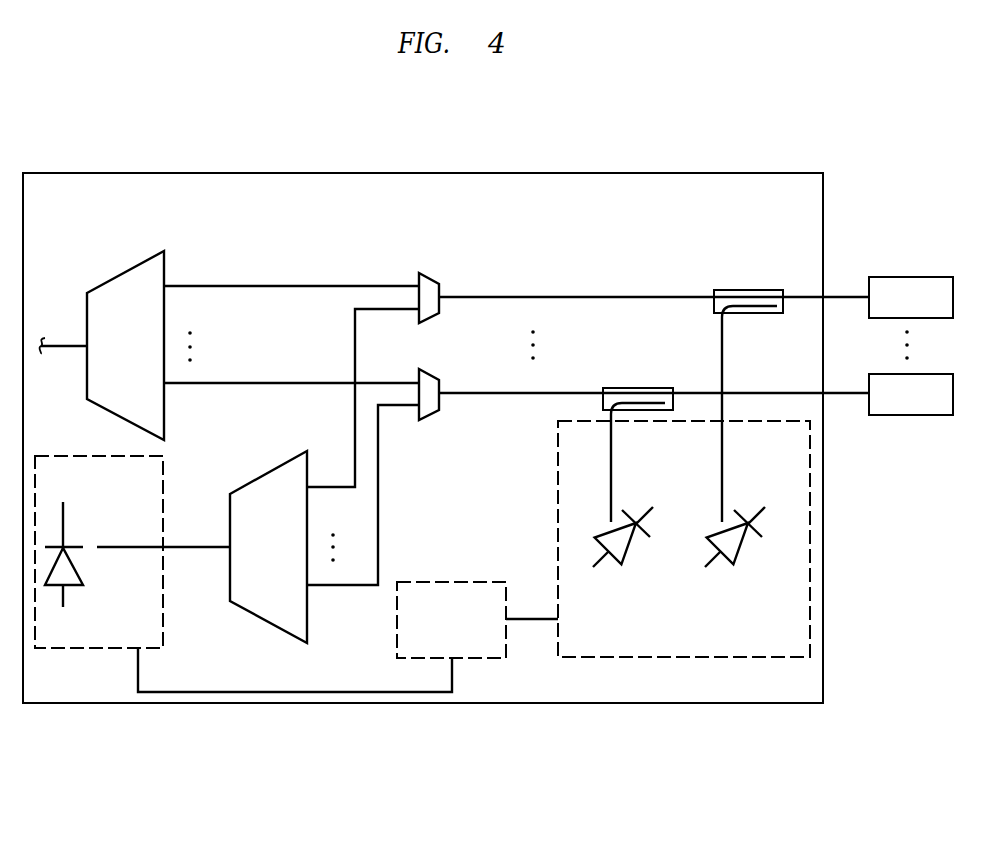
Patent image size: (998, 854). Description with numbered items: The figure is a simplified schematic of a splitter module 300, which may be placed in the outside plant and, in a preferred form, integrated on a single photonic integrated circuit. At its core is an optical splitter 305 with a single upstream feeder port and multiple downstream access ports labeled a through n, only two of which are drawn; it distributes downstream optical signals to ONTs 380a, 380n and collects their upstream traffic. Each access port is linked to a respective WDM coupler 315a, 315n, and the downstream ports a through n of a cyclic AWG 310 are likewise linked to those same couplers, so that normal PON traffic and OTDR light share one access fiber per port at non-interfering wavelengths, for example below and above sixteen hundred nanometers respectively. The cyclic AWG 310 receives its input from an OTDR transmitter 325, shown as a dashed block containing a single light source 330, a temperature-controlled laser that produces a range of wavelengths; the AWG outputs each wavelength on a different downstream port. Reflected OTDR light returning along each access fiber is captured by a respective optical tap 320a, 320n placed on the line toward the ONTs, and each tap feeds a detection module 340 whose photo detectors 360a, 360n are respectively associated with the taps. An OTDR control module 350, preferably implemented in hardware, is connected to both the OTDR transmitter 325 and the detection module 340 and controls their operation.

The splitter module 300 is at (657, 231).
The optical splitter 305 is at (143, 360).
The cyclic AWG 310 is at (288, 563).
The WDM coupler 315a is at (433, 277).
The WDM coupler 315n is at (433, 373).
The optical tap 320a is at (748, 288).
The optical tap 320n is at (638, 386).
The OTDR transmitter 325 is at (165, 478).
The light source 330 is at (68, 587).
The detection module 340 is at (602, 659).
The OTDR control module 350 is at (473, 582).
The photo detector 360a is at (740, 547).
The photo detector 360n is at (628, 547).
The ONT 380a is at (915, 276).
The ONT 380n is at (915, 373).